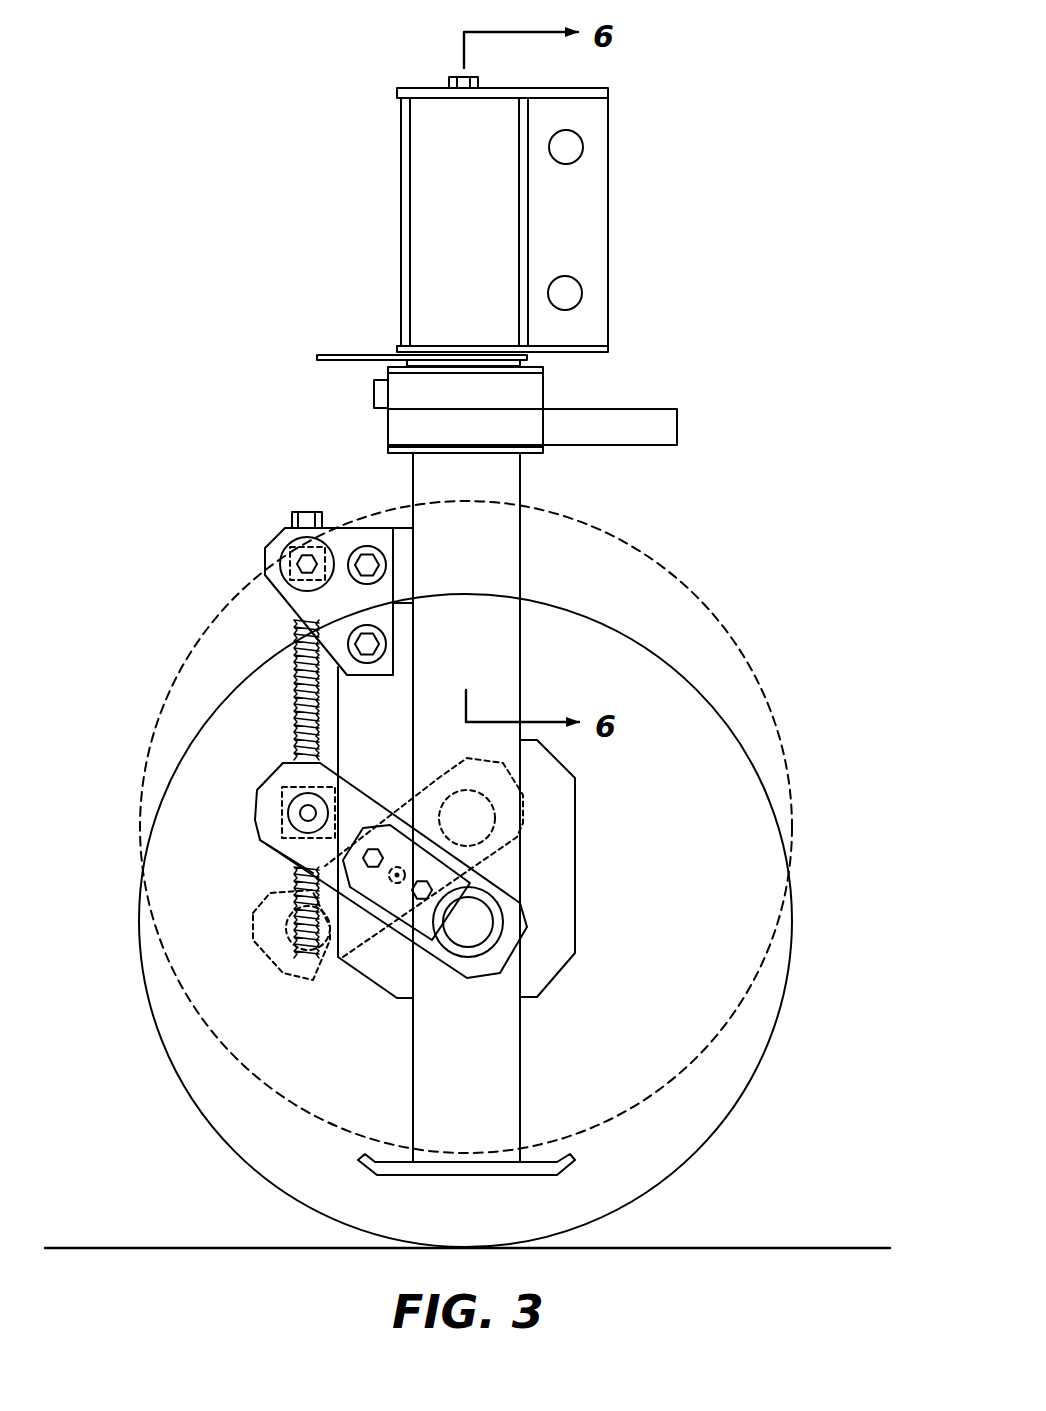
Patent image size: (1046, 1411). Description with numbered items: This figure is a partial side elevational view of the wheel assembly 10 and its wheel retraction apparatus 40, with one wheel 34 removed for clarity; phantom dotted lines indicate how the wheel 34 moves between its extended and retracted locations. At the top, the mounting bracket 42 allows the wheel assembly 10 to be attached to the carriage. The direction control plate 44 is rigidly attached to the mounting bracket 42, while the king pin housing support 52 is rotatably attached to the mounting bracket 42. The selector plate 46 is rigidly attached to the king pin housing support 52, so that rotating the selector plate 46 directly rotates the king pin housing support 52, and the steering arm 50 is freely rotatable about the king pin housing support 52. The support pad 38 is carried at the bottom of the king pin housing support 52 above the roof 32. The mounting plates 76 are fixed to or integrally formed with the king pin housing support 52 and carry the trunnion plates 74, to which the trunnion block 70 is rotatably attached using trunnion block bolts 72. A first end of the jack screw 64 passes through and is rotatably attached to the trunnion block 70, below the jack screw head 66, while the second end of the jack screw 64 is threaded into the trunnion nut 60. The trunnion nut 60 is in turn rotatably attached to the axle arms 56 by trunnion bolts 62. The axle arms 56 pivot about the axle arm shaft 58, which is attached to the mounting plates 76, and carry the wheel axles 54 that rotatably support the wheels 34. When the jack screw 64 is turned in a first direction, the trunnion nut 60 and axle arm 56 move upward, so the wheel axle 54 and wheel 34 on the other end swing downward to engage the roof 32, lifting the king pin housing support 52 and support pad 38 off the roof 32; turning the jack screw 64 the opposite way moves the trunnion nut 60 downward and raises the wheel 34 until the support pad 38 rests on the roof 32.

The wheel assembly 10 is at (148, 100).
The roof 32 is at (185, 1248).
The wheel 34 is at (215, 1082).
The support pad 38 is at (382, 1170).
The wheel retraction apparatus 40 is at (266, 478).
The mounting bracket 42 is at (598, 320).
The direction control plate 44 is at (318, 357).
The selector plate 46 is at (530, 395).
The steering arm 50 is at (653, 425).
The king pin housing support 52 is at (505, 520).
The wheel axle 54 is at (467, 922).
The axle arm 56 is at (437, 950).
The axle arm shaft 58 is at (388, 878).
The trunnion nut 60 is at (280, 792).
The trunnion bolt 62 is at (307, 815).
The jack screw 64 is at (297, 675).
The jack screw head 66 is at (308, 520).
The trunnion block 70 is at (290, 575).
The trunnion block bolt 72 is at (308, 564).
The trunnion plate 74 is at (307, 607).
The mounting plate 76 is at (370, 723).